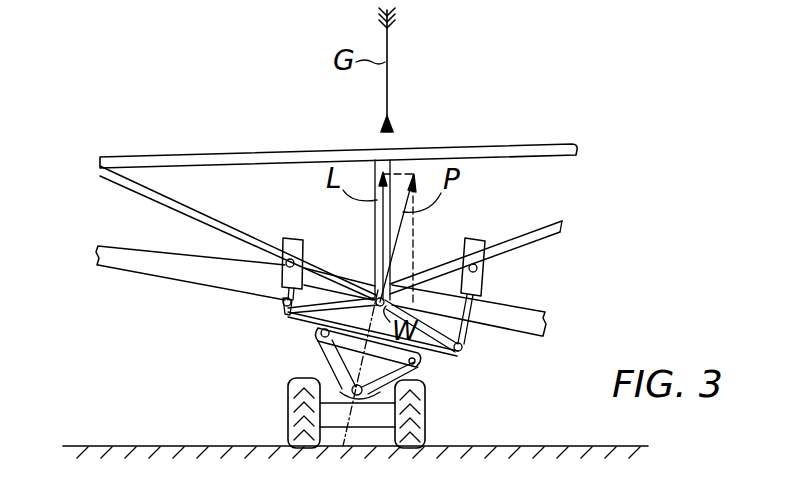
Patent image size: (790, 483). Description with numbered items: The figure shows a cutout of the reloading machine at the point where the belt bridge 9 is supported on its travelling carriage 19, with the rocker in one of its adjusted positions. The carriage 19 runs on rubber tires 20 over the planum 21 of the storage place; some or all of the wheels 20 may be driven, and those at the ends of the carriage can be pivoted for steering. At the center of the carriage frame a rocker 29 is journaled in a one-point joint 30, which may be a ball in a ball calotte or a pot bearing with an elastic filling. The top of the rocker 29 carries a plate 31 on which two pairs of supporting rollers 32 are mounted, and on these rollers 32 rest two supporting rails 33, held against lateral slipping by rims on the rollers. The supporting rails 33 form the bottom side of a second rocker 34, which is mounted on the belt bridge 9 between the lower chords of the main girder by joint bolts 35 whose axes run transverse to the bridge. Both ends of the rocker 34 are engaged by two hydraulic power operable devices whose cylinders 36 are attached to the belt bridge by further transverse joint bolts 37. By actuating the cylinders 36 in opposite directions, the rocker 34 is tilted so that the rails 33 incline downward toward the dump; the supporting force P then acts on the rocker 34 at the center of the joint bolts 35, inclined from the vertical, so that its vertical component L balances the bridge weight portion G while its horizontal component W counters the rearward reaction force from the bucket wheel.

The belt bridge 9 is at (234, 138).
The carriage 19 is at (274, 415).
The rubber tires 20 is at (427, 405).
The planum 21 is at (104, 444).
The rocker 29 is at (393, 371).
The one-point joint 30 is at (337, 383).
The plate 31 is at (424, 366).
The supporting rollers 32 is at (318, 331).
The supporting rails 33 is at (368, 333).
The rocker 34 is at (283, 317).
The joint bolts 35 is at (368, 287).
The cylinders 36 is at (290, 238).
The joint bolts 37 is at (283, 262).